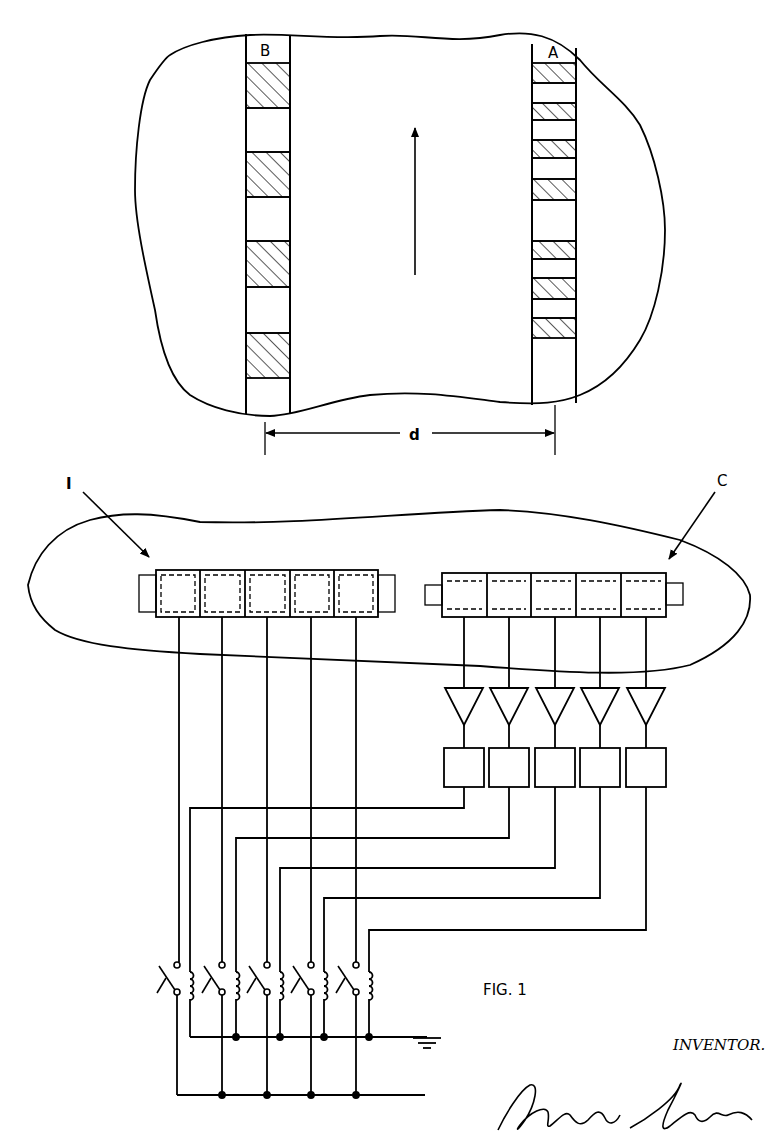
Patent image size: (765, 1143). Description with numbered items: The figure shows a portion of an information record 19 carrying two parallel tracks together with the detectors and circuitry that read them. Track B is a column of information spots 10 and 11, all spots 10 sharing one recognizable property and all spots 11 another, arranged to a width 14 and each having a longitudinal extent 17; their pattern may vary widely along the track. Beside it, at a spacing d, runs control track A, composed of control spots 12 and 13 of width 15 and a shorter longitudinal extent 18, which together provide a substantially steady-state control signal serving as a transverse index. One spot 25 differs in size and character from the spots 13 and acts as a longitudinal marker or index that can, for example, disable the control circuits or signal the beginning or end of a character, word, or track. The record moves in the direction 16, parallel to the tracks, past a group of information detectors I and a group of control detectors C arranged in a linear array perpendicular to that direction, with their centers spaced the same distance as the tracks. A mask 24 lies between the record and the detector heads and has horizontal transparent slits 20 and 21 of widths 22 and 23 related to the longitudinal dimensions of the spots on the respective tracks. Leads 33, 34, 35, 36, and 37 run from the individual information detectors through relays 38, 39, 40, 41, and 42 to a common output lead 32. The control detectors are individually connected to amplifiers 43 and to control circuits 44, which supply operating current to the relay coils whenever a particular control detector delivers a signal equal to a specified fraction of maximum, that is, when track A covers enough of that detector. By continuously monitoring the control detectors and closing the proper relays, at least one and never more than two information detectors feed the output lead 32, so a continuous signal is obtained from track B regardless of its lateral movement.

The information spots 10 is at (291, 89).
The information spots 11 is at (291, 135).
The control spots 12 is at (577, 114).
The control spots 13 is at (577, 171).
The width of track B 14 is at (330, 393).
The width of track A 15 is at (612, 361).
The direction of record movement 16 is at (427, 201).
The longitudinal extent of information spots 17 is at (192, 70).
The longitudinal extent of control spots 18 is at (503, 66).
The information record 19 is at (362, 239).
The transparent slit 20 is at (382, 618).
The transparent slit 21 is at (675, 607).
The width of slit 22 is at (124, 545).
The width of slit 23 is at (700, 553).
The mask 24 is at (129, 653).
The marker spot 25 is at (577, 226).
The output lead 32 is at (400, 1096).
The lead 33 is at (177, 707).
The lead 34 is at (220, 707).
The lead 35 is at (265, 707).
The lead 36 is at (309, 707).
The lead 37 is at (354, 707).
The relay 38 is at (163, 990).
The relay 39 is at (209, 990).
The relay 40 is at (254, 990).
The relay 41 is at (298, 990).
The relay 42 is at (343, 990).
The amplifiers 43 is at (662, 712).
The control circuits 44 is at (668, 768).